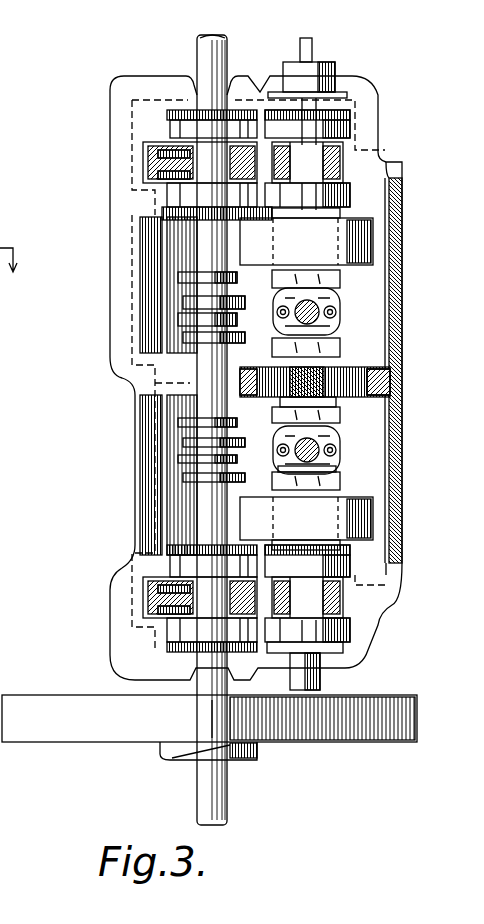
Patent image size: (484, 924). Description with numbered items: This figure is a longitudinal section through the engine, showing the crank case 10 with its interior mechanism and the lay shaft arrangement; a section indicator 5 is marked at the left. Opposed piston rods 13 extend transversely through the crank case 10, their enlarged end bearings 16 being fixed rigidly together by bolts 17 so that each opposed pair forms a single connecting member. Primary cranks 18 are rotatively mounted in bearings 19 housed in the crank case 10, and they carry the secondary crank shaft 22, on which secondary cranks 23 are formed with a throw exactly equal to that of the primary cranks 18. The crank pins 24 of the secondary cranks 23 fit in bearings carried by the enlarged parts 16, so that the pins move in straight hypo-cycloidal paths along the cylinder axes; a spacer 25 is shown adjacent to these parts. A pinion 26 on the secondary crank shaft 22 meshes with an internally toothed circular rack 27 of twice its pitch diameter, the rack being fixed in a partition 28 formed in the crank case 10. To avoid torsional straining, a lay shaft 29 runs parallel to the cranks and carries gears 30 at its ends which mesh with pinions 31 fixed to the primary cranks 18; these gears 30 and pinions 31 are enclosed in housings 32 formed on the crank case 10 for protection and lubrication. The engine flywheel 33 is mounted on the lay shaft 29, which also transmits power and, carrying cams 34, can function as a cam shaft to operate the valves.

The section line 5- 5 is at (13, 267).
The crank case 10 is at (137, 451).
The piston rods 13 is at (325, 303).
The enlarged end bearings 16 is at (340, 320).
The bolts 17 is at (278, 315).
The primary cranks 18 is at (306, 379).
The bearings 19 is at (340, 148).
The secondary crank shaft 22 is at (274, 414).
The secondary cranks 23 is at (274, 348).
The crank pins 24 is at (290, 285).
The spacer 25 is at (278, 469).
The pinion 26 is at (336, 398).
The internally toothed circular rack 27 is at (370, 368).
The partition 28 is at (228, 392).
The lay shaft 29 is at (211, 430).
The gears 30 is at (145, 162).
The pinions 31 is at (338, 136).
The housings 32 is at (147, 95).
The flywheel 33 is at (209, 727).
The cams 34 is at (185, 320).